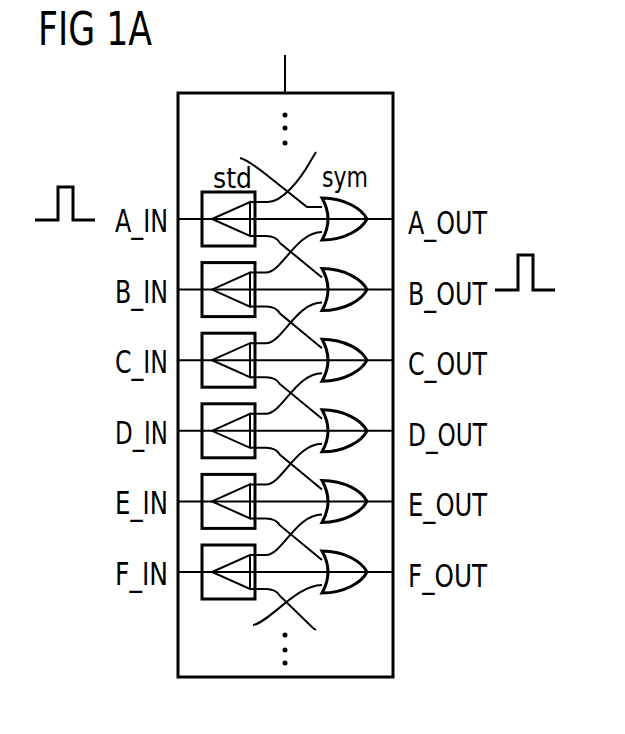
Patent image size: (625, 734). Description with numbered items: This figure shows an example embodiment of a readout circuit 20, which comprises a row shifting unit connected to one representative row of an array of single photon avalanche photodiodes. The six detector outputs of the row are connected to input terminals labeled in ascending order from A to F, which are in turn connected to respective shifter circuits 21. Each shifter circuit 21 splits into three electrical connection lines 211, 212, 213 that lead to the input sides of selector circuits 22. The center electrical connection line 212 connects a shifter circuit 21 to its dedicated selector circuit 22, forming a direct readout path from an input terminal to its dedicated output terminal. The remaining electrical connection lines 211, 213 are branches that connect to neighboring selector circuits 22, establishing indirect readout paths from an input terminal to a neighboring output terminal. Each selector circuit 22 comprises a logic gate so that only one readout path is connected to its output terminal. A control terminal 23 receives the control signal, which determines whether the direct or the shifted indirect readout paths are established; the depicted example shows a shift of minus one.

The readout circuit 20 is at (393, 123).
The shifter circuit 21 is at (210, 192).
The electrical connection line 211 is at (272, 195).
The center electrical connection line 212 is at (318, 148).
The electrical connection line 213 is at (293, 258).
The selector circuit 22 is at (370, 200).
The control terminal 23 is at (287, 91).